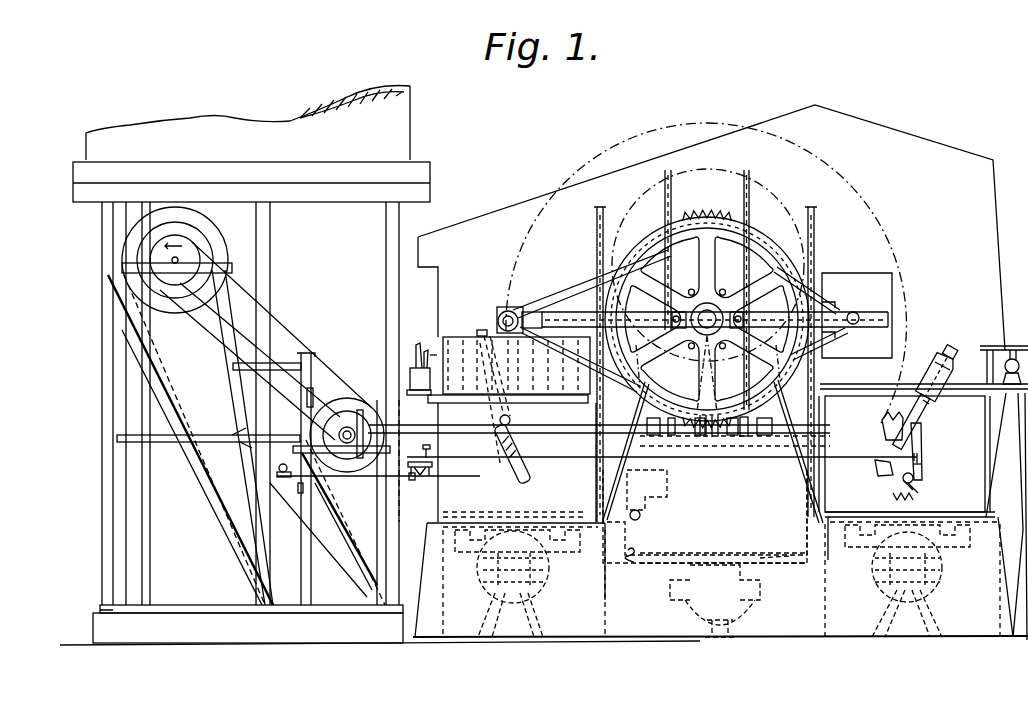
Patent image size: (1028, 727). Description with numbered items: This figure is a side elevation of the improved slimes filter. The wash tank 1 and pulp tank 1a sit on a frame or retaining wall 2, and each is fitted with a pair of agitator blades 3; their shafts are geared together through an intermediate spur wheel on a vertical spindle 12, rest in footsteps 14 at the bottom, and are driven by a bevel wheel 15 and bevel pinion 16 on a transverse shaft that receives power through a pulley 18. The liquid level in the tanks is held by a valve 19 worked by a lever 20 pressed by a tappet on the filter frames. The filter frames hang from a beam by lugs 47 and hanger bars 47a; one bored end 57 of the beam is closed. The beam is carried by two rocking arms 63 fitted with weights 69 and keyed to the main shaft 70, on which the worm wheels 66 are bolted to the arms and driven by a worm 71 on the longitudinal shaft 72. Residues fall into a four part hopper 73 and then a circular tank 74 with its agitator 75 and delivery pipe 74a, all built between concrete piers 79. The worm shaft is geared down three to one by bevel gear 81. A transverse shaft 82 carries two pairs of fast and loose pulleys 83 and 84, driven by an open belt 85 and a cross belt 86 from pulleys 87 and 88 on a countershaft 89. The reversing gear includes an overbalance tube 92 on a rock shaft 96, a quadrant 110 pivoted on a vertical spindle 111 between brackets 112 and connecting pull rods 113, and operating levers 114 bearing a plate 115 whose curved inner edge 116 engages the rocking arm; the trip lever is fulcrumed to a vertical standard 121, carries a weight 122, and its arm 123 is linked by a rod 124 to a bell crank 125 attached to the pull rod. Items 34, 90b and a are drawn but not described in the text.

The wash tank 1 is at (510, 558).
The pulp tank 1a is at (904, 454).
The frame or retaining wall 2 is at (728, 577).
The agitator blades 3 is at (921, 502).
The vertical spindle 12 is at (712, 613).
The footsteps 14 is at (722, 613).
The bevel wheel 15 is at (556, 612).
The bevel pinion 16 is at (553, 568).
The pulley 18 is at (553, 588).
The valve 19 is at (1006, 499).
The lever 20 is at (1004, 357).
The belt 34 is at (680, 321).
The lugs 47 is at (485, 336).
The hanger bars 47a is at (500, 312).
The end of beam 57 is at (510, 312).
The rocking arms 63 is at (565, 318).
The worm wheel 66 is at (688, 257).
The weights 69 is at (857, 315).
The main shaft 70 is at (716, 333).
The worm 71 is at (706, 462).
The longitudinal shaft 72 is at (570, 430).
The four part hopper 73 is at (633, 398).
The circular tank 74 is at (752, 545).
The discharge or delivery pipe 74a is at (644, 554).
The agitator 75 is at (775, 548).
The concrete piers 79 is at (705, 553).
The bevel gear 81 is at (365, 408).
The transverse shaft 82 is at (327, 522).
The pulleys 83 is at (306, 418).
The pulleys 84 is at (332, 402).
The open belt 85 is at (290, 318).
The cross belt 86 is at (228, 358).
The pulley 87 is at (192, 252).
The pulley 88 is at (185, 228).
The countershaft 89 is at (172, 261).
The nozzle 90b is at (419, 359).
The article a is at (417, 355).
The overbalance tube 92 is at (278, 468).
The rock shaft 96 is at (326, 476).
The quadrant 110 is at (416, 485).
The vertical spindle 111 is at (436, 456).
The brackets 112 is at (437, 470).
The pull rods 113 is at (843, 462).
The operating levers 114 is at (928, 408).
The plate 115 is at (943, 370).
The curved inner edge 116 is at (942, 352).
The vertical standard 121 is at (892, 440).
The weight 122 is at (890, 456).
The arm 123 is at (924, 432).
The rod 124 is at (924, 464).
The bell crank 125 is at (918, 478).